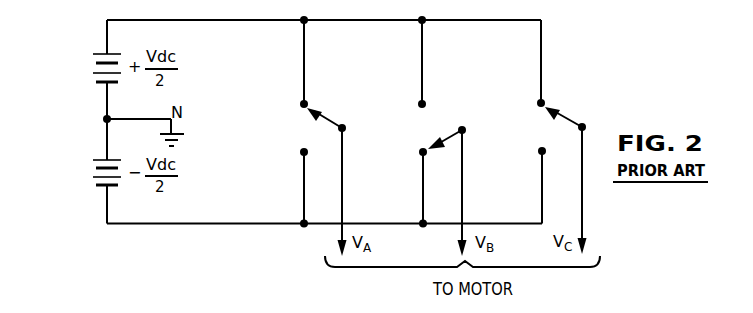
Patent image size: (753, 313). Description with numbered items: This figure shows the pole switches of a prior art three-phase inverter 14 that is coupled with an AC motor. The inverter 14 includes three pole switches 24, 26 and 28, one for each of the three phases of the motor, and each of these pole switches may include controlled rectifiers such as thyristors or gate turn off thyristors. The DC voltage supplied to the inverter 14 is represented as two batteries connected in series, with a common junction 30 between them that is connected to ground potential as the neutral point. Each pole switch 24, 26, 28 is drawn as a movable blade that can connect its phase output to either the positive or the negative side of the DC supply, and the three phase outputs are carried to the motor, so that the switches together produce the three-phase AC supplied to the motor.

The inverter 14 is at (398, 70).
The pole switch 24 is at (333, 121).
The pole switch 26 is at (457, 128).
The pole switch 28 is at (567, 117).
The common junction 30 is at (103, 118).